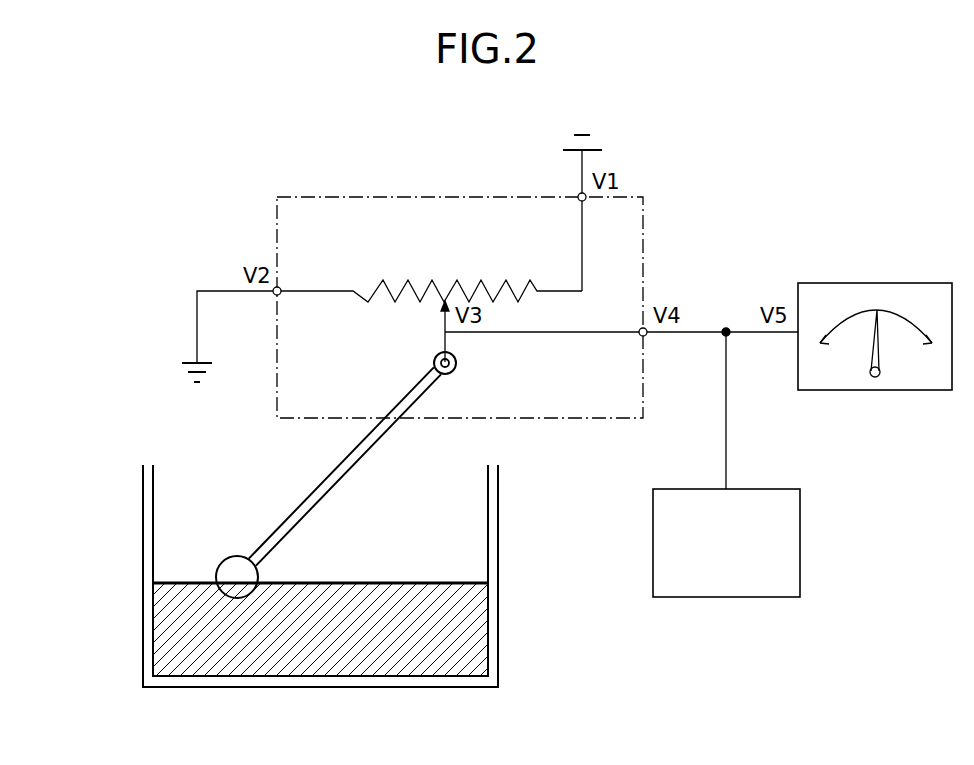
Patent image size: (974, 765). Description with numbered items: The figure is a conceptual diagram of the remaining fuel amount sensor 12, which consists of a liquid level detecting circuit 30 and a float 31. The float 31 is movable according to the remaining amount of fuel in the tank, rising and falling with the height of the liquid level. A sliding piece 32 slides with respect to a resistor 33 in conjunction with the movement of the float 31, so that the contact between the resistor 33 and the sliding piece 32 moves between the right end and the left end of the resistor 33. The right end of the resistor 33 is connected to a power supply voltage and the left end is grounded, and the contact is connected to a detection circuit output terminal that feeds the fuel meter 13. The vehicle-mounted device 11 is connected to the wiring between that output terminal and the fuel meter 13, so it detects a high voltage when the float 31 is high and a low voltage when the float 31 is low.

The vehicle-mounted device 11 is at (800, 520).
The remaining fuel amount sensor 12 is at (158, 418).
The fuel meter 13 is at (828, 283).
The liquid level detecting circuit 30 is at (300, 197).
The float 31 is at (233, 558).
The sliding piece 32 is at (443, 321).
The resistor 33 is at (356, 287).